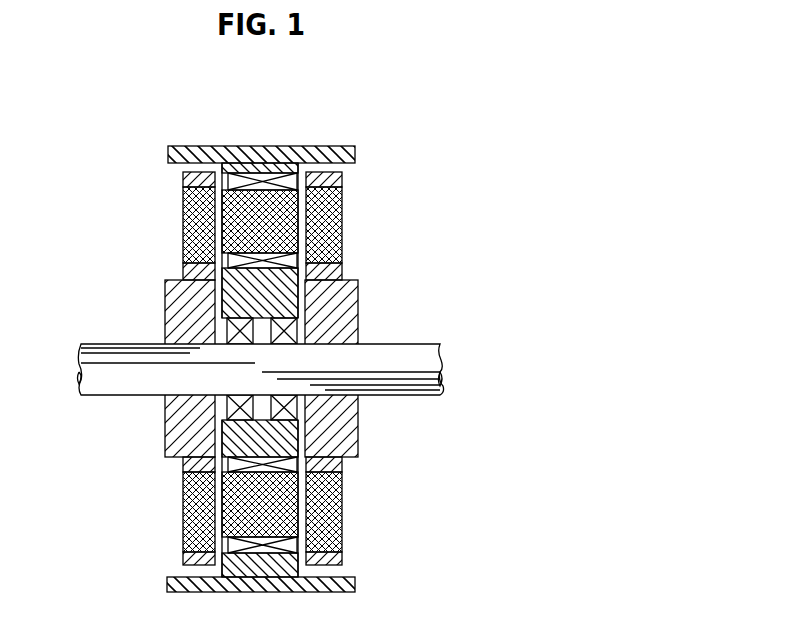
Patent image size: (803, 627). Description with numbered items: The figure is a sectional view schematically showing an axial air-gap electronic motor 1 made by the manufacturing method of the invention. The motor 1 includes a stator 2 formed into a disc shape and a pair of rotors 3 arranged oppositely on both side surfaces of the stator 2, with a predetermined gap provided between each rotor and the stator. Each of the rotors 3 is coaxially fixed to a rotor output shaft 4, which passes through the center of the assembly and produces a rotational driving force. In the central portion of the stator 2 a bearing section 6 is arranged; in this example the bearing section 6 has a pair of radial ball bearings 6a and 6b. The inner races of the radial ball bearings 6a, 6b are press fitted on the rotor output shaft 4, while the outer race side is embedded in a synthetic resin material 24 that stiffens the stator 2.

The axial air-gap electronic motor 1 is at (429, 208).
The stator 2 is at (292, 141).
The rotor 3 is at (167, 237).
The rotor output shaft 4 is at (436, 362).
The bearing section 6 is at (253, 370).
The radial ball bearing 6a is at (298, 401).
The radial ball bearing 6b is at (228, 330).
The synthetic resin material 24 is at (233, 434).